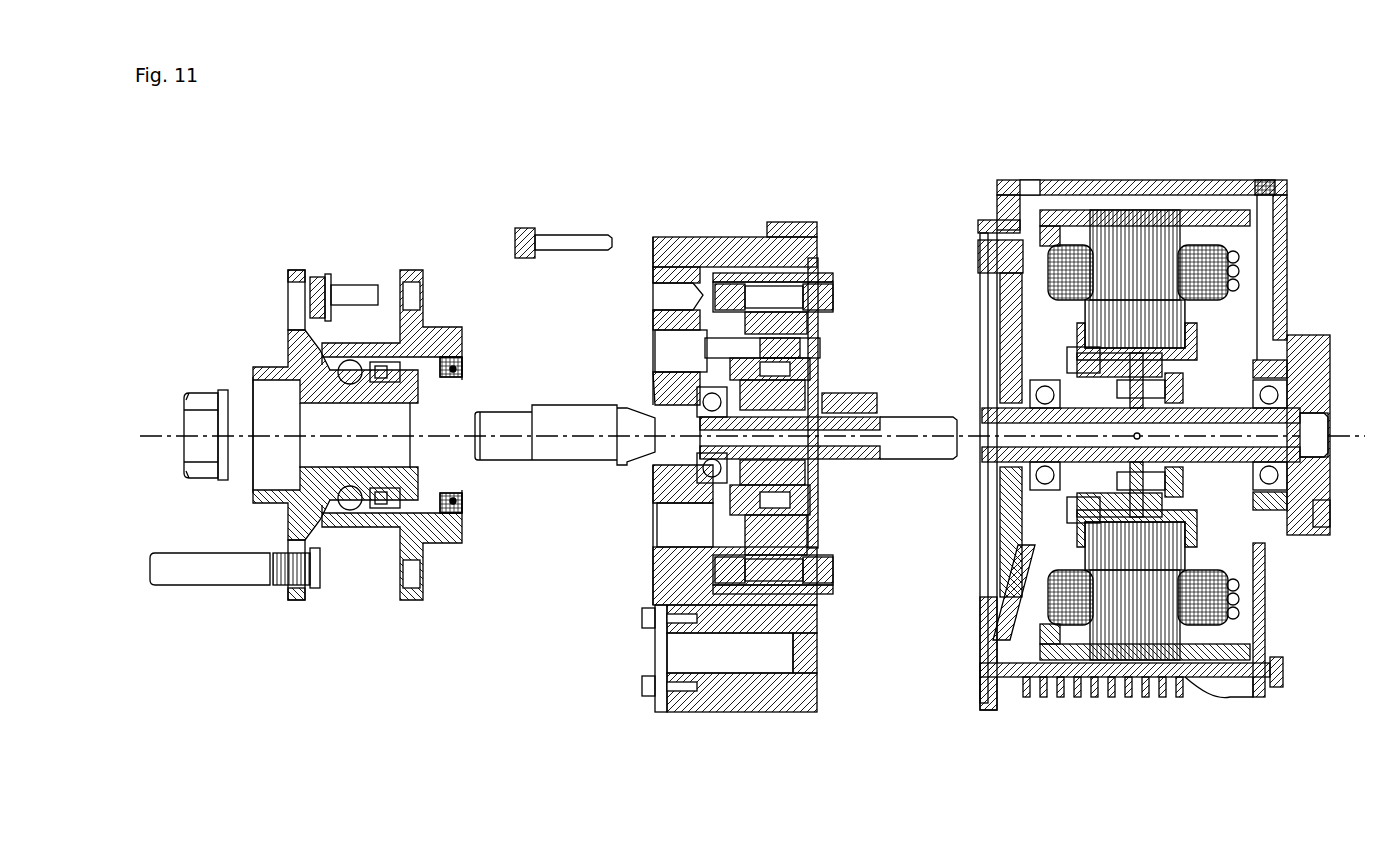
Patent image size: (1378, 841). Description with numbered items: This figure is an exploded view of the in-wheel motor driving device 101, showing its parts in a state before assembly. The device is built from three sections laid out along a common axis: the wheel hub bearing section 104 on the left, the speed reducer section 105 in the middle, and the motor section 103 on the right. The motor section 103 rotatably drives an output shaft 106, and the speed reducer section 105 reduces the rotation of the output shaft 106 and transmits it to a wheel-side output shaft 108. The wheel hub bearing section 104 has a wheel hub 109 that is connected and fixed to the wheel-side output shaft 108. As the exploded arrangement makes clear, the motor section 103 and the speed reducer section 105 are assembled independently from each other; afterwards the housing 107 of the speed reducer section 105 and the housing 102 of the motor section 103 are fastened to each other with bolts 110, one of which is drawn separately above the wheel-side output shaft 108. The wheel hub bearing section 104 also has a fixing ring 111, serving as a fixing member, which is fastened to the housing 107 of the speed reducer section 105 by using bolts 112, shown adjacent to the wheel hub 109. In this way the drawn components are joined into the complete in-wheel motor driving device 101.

The in-wheel motor driving device 101 is at (871, 178).
The housing 102 is at (1150, 183).
The motor section 103 is at (1308, 734).
The wheel hub bearing section 104 is at (460, 727).
The speed reducer section 105 is at (956, 734).
The output shaft 106 is at (1223, 408).
The housing 107 is at (686, 265).
The wheel-side output shaft 108 is at (585, 458).
The wheel hub 109 is at (410, 582).
The bolts 110 is at (520, 236).
The fixing ring 111 is at (392, 343).
The bolts 112 is at (320, 365).